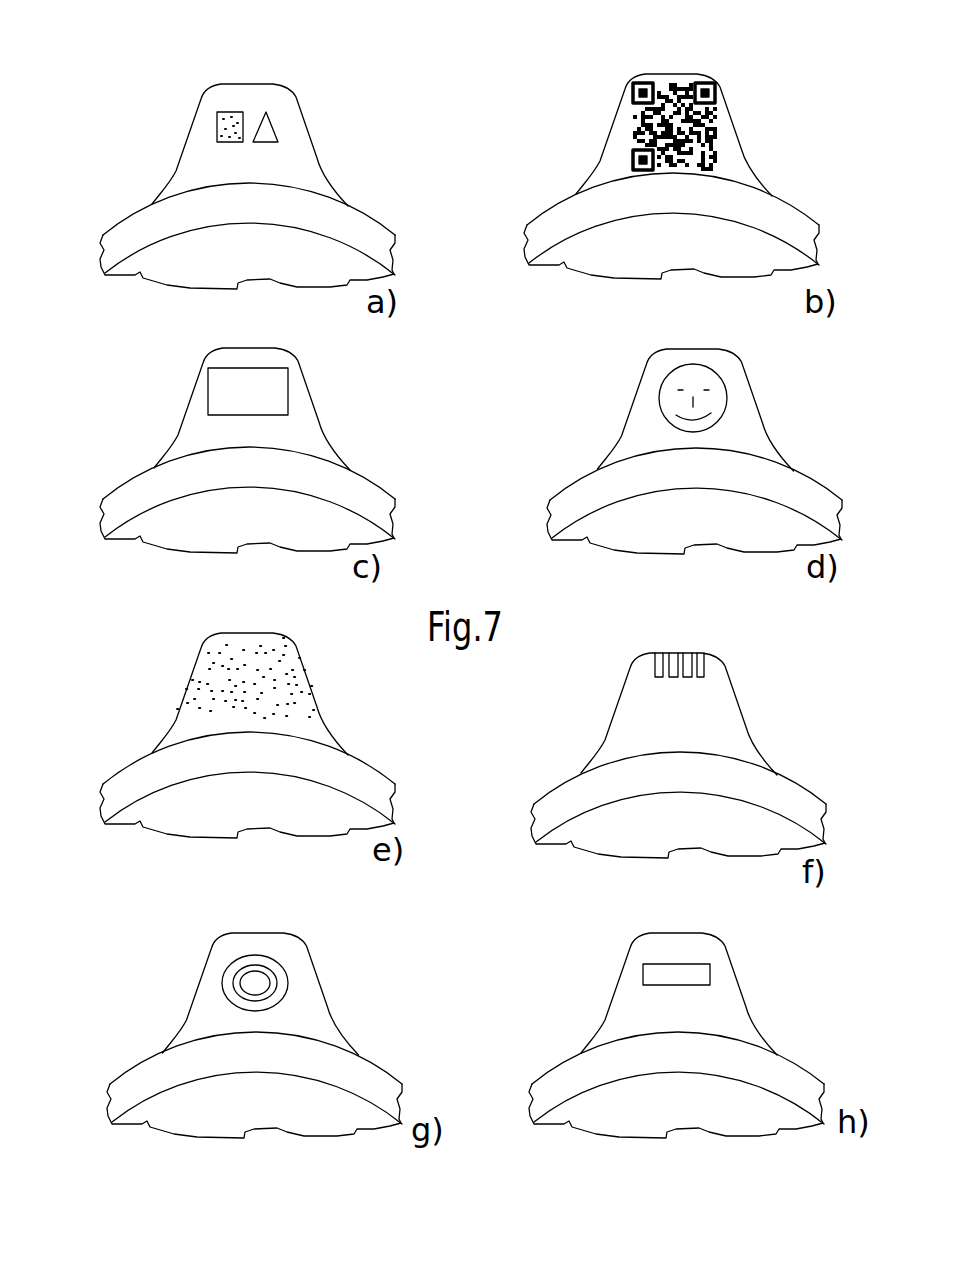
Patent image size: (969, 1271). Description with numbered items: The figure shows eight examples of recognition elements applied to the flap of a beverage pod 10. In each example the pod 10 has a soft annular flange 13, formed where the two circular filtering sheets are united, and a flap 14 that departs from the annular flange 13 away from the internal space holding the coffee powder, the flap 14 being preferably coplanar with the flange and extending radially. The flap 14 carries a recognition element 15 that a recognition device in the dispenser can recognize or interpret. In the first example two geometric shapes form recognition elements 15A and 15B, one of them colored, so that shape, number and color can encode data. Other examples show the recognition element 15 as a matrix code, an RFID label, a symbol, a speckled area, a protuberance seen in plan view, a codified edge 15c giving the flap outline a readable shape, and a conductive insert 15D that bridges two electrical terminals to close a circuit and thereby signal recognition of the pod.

The pod 10 is at (128, 210).
The annular flange 13 is at (363, 227).
The flap 14 is at (333, 173).
The recognition element 15 is at (462, 547).
The recognition element 15A is at (191, 123).
The recognition element 15B is at (307, 123).
The edge with codified shape 15c is at (682, 643).
The conductive insert 15D is at (683, 942).